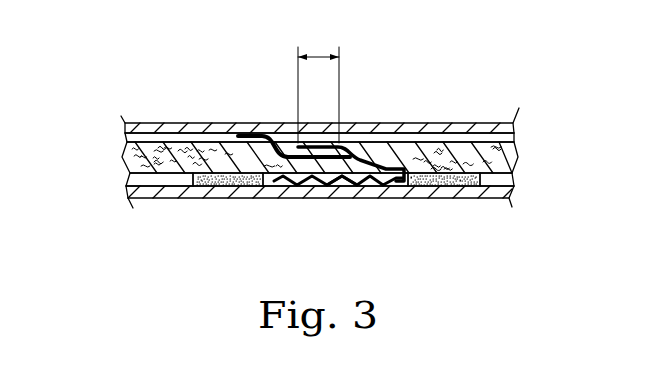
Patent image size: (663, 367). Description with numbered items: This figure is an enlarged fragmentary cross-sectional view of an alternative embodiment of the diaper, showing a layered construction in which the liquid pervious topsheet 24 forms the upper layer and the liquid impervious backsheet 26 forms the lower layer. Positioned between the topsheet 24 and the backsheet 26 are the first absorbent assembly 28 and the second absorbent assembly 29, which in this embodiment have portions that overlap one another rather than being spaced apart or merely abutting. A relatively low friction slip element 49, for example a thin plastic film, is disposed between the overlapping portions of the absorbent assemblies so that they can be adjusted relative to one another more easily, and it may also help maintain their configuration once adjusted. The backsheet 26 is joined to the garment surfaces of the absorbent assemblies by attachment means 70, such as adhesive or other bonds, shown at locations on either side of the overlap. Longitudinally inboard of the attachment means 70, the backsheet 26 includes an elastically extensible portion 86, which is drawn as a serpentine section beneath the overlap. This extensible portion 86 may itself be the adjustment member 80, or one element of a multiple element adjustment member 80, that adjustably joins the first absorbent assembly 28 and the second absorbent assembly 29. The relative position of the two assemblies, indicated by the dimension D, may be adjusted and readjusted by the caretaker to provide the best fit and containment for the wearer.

The topsheet 24 is at (491, 125).
The backsheet 26 is at (157, 192).
The first absorbent assembly 28 is at (375, 155).
The second absorbent assembly 29 is at (161, 157).
The slip element 49 is at (286, 152).
The attachment means 70 is at (233, 186).
The adjustment member 80 is at (316, 183).
The elastically extensible portion 86 is at (338, 186).
The longitudinal spacing D is at (320, 55).